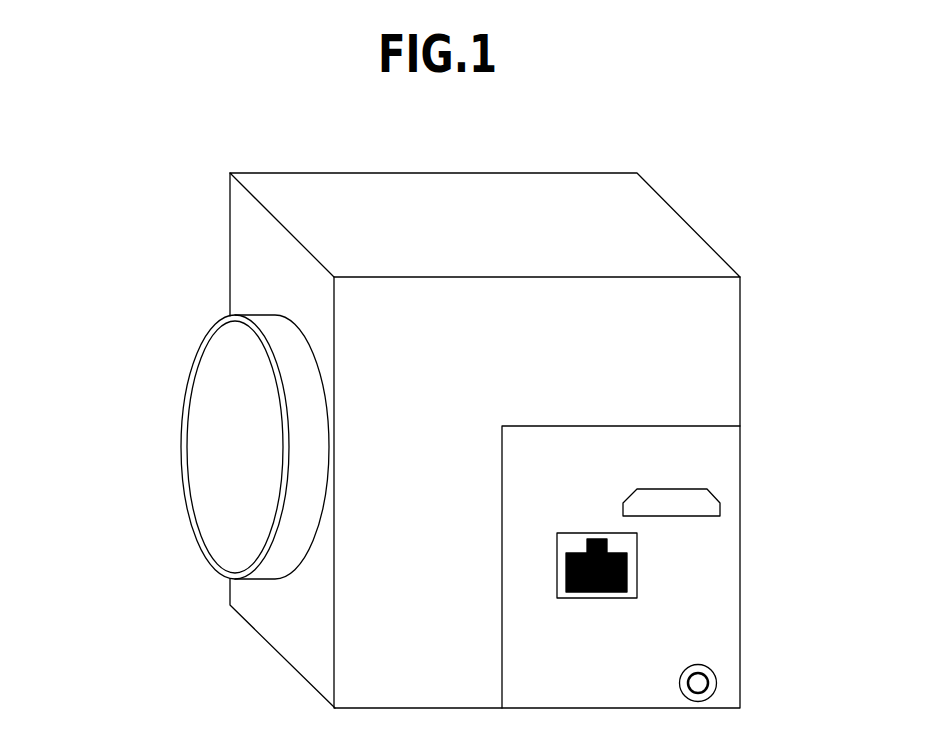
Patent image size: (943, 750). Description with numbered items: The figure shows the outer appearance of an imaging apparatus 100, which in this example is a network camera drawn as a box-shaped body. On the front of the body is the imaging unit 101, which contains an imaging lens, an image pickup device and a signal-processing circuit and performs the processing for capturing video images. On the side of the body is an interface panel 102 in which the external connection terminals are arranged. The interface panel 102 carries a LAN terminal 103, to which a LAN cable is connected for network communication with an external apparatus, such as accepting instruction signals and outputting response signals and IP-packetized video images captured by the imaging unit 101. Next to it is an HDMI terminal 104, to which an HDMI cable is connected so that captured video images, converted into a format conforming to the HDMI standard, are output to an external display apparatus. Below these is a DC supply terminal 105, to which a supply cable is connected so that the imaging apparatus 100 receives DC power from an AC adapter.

The imaging apparatus 100 is at (683, 222).
The imaging unit 101 is at (205, 439).
The interface panel 102 is at (502, 572).
The LAN terminal 103 is at (580, 533).
The HDMI terminal 104 is at (675, 489).
The DC supply terminal 105 is at (698, 665).